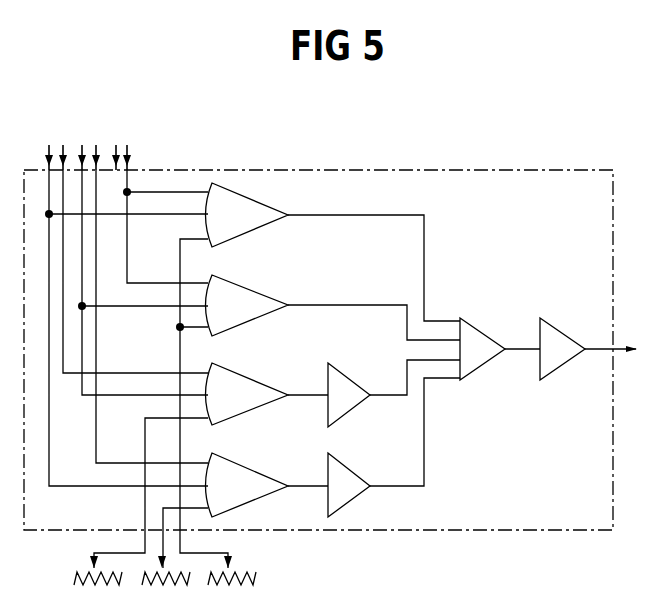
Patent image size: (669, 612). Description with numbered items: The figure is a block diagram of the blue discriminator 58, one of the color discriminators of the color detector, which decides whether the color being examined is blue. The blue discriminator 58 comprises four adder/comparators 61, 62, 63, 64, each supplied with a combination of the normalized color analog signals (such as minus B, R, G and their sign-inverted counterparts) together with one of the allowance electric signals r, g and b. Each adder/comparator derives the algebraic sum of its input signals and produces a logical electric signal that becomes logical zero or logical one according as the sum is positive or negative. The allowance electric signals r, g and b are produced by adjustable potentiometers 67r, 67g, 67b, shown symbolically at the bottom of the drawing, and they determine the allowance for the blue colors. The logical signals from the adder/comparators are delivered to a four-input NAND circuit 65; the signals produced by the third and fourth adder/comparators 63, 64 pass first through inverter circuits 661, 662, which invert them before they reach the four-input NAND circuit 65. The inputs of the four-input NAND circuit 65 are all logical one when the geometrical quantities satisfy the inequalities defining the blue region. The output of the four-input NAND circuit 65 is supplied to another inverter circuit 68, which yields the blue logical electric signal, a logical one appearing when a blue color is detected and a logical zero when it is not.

The blue discriminator 58 is at (572, 166).
The adder/comparator 61 is at (262, 196).
The adder/comparator 62 is at (258, 288).
The adder/comparator 63 is at (258, 382).
The adder/comparator 64 is at (258, 471).
The inverter circuit 661 is at (355, 385).
The inverter circuit 662 is at (358, 474).
The four-input NAND circuit 65 is at (493, 358).
The inverter circuit 68 is at (573, 358).
The adjustable potentiometer 67r is at (113, 590).
The adjustable potentiometer 67g is at (178, 590).
The adjustable potentiometer 67b is at (244, 590).